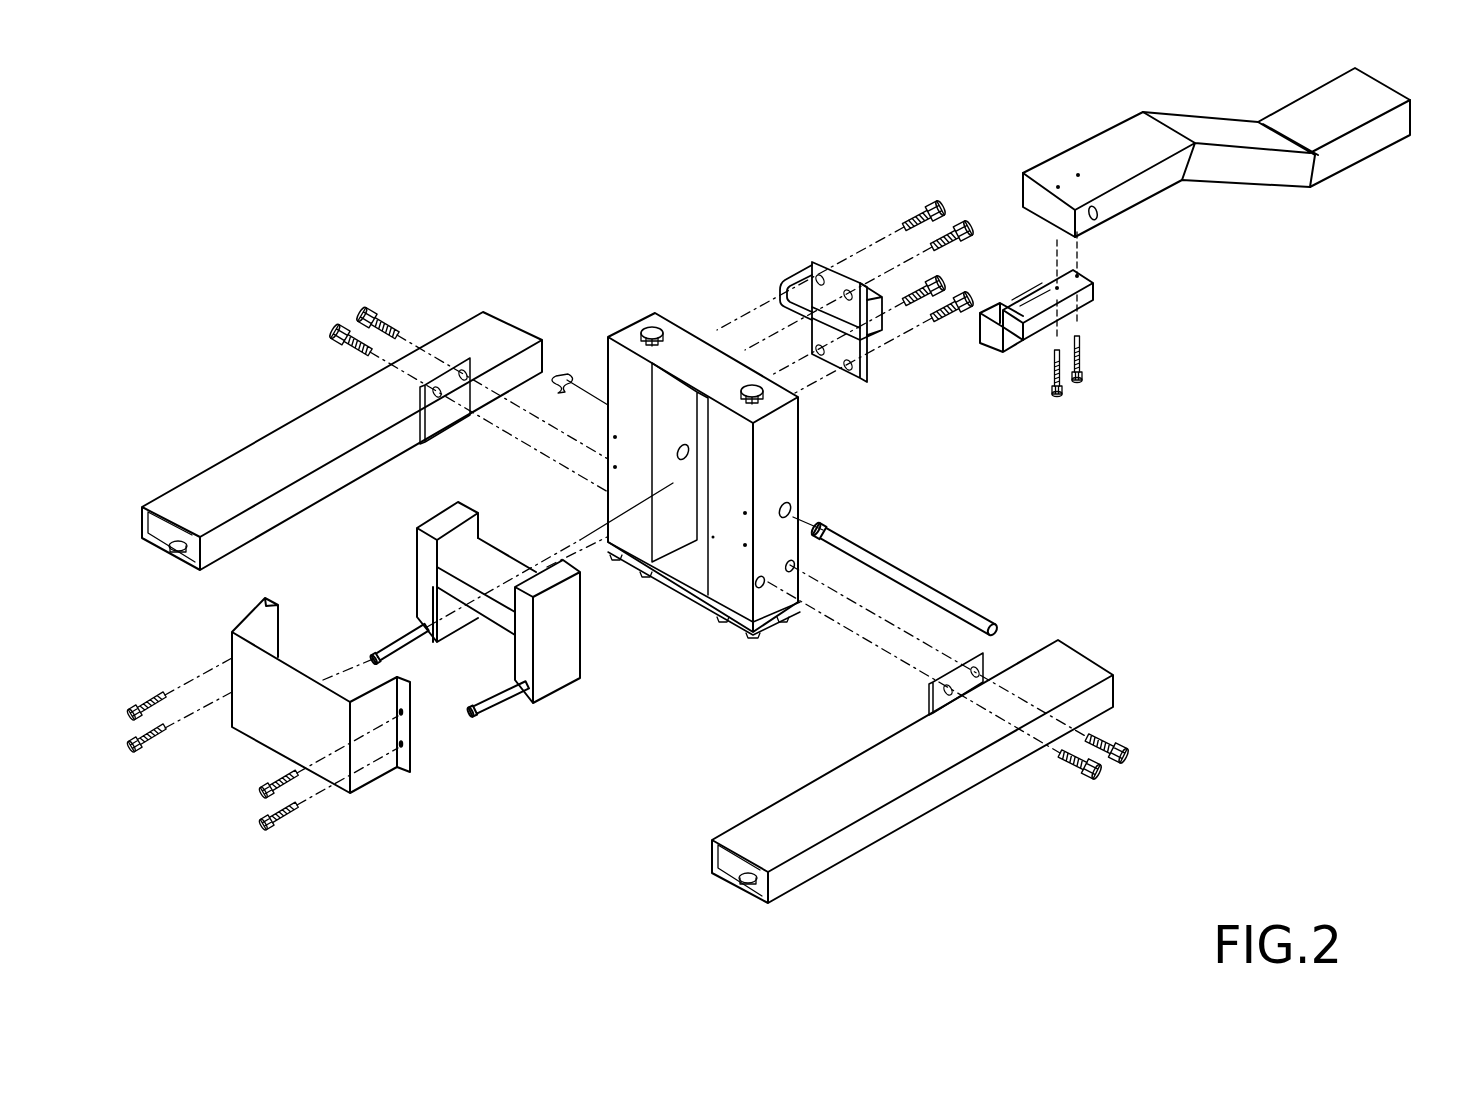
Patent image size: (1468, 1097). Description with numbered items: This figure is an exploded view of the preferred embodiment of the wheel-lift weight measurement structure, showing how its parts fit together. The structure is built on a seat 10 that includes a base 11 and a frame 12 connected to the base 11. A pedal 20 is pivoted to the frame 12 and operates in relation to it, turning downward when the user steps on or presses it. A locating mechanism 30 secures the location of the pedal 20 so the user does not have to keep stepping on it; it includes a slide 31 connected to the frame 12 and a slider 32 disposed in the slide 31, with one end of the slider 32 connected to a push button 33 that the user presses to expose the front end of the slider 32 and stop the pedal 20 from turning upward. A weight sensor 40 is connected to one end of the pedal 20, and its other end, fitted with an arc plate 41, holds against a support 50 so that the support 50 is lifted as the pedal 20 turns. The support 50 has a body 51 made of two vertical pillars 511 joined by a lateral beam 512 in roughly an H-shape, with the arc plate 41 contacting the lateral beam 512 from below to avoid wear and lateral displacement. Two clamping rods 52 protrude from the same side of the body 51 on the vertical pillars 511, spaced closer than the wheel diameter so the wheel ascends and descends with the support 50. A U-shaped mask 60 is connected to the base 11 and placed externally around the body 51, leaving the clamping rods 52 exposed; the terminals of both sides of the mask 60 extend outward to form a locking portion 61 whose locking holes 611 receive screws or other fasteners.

The seat 10 is at (527, 237).
The base 11 is at (203, 477).
The frame 12 is at (792, 463).
The pedal 20 is at (1363, 150).
The locating mechanism 30 is at (876, 160).
The slide 31 is at (820, 263).
The slider 32 is at (797, 313).
The push button 33 is at (800, 277).
The weight sensor 40 is at (1087, 295).
The arc plate 41 is at (1007, 327).
The support 50 is at (532, 759).
The body 51 is at (667, 634).
The vertical pillar 511 is at (445, 520).
The lateral beam 512 is at (492, 613).
The clamping rod 52 is at (397, 637).
The U-shaped mask 60 is at (272, 738).
The locking portion 61 is at (410, 775).
The locking hole 611 is at (398, 713).